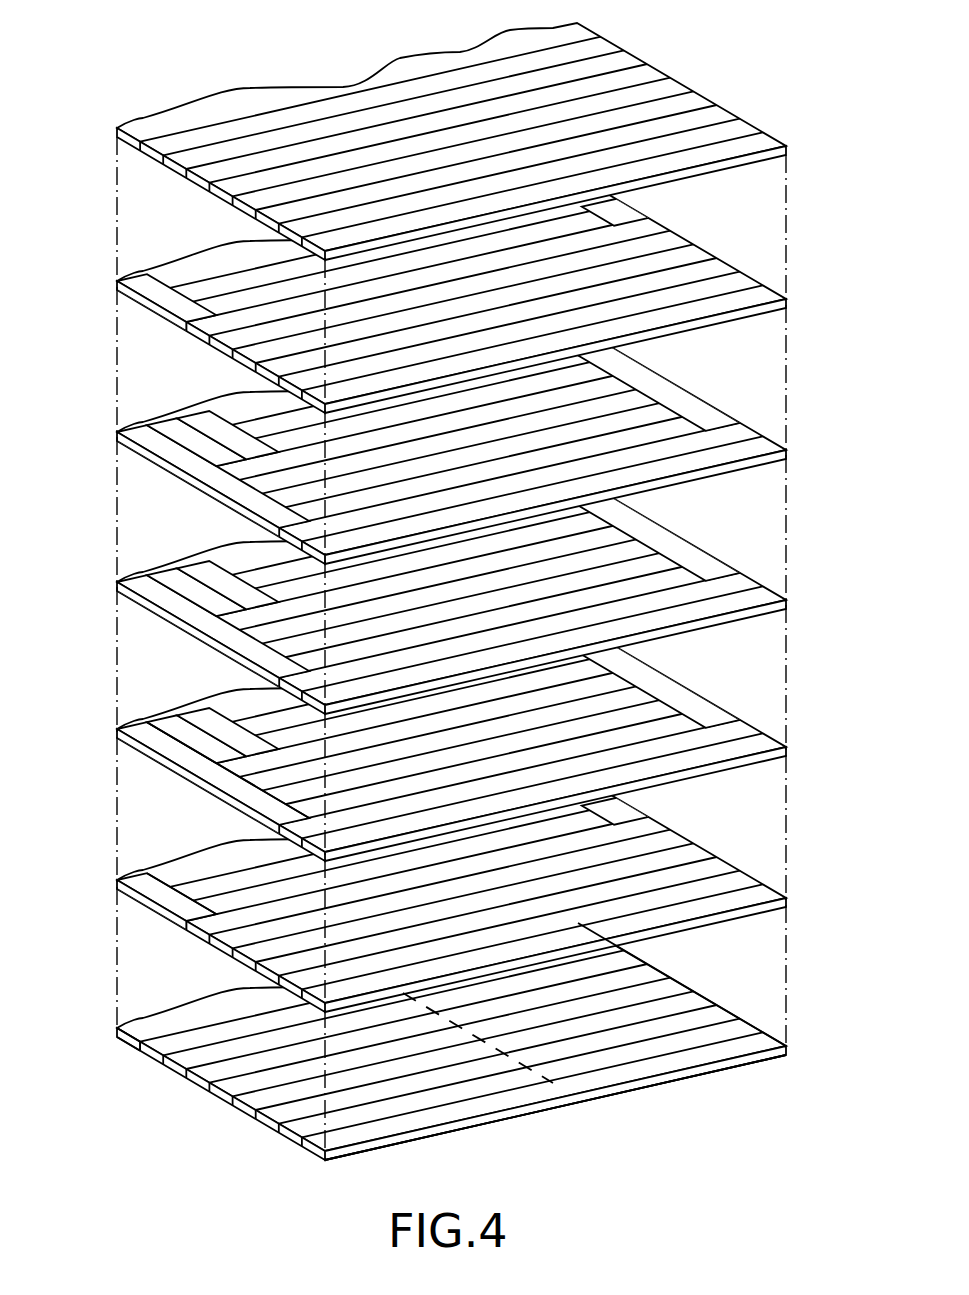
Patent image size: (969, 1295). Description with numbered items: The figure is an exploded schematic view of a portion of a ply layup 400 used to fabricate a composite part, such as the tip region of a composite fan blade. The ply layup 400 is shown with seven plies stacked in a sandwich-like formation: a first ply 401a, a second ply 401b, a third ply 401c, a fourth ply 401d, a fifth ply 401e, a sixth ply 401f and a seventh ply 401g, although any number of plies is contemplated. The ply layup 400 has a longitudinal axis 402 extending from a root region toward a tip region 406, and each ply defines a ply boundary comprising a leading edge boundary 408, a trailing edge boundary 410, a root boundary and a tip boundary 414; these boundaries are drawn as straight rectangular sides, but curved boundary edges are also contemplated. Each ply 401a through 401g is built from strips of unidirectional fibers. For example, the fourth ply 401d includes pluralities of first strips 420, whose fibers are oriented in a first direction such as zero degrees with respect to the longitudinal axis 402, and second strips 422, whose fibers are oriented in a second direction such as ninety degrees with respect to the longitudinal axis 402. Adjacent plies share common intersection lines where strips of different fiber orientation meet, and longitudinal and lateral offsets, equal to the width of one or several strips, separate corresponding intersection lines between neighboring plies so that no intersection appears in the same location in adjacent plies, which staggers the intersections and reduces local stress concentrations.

The ply layup 400 is at (104, 73).
The first ply 401a is at (770, 1043).
The second ply 401b is at (768, 895).
The third ply 401c is at (768, 744).
The fourth ply 401d is at (768, 597).
The fifth ply 401e is at (768, 447).
The sixth ply 401f is at (768, 296).
The seventh ply 401g is at (760, 144).
The longitudinal axis 402 is at (567, 1092).
The tip region 406 is at (186, 1114).
The leading edge boundary 408 is at (698, 993).
The trailing edge boundary 410 is at (148, 1047).
The tip boundary 414 is at (453, 1128).
The first strips 420 is at (148, 738).
The second strips 422 is at (173, 880).